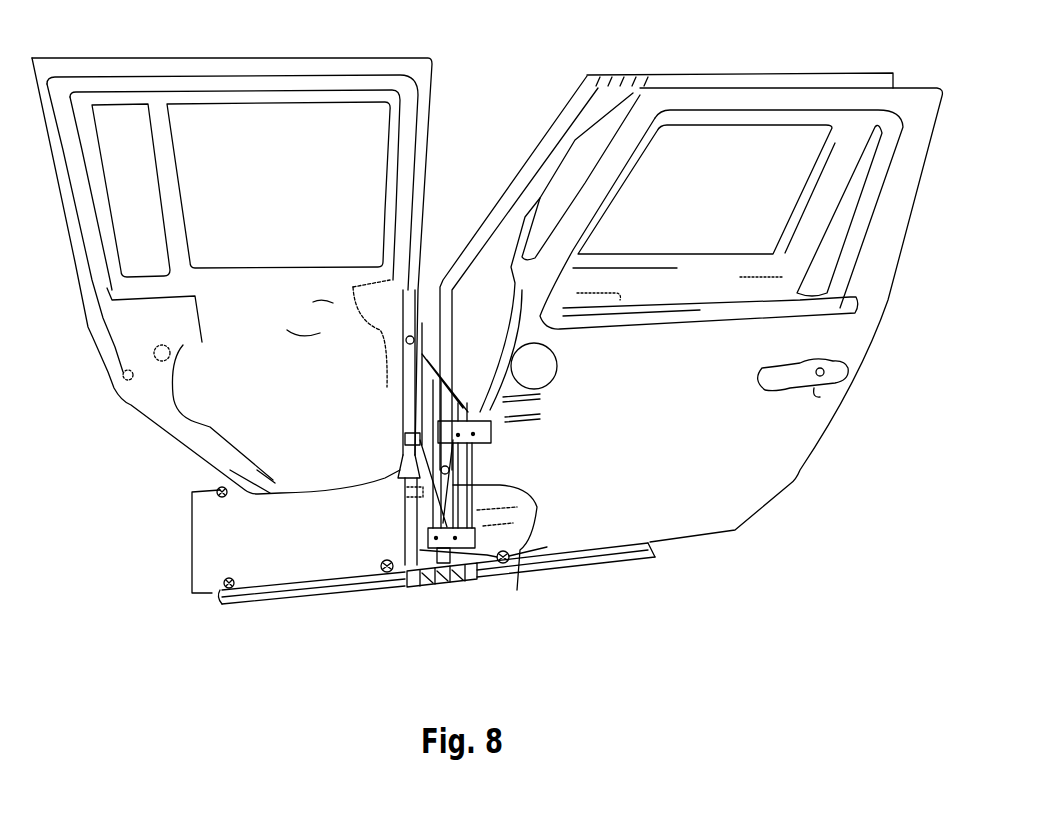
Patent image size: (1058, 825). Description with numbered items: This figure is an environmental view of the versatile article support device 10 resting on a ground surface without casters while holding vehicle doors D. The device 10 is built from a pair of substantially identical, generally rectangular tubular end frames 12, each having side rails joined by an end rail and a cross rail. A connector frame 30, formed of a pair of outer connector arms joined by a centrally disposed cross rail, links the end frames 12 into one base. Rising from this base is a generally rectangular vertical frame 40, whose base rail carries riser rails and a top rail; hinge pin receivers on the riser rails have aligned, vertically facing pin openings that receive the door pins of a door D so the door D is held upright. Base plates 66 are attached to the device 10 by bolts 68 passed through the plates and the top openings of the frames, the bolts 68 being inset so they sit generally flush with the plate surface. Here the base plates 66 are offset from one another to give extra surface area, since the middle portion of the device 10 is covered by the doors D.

The versatile article support device 10 is at (378, 527).
The end frame 12 is at (322, 592).
The connector frame 30 is at (447, 583).
The vertical frame 40 is at (509, 563).
The base plate 66 is at (222, 560).
The bolt 68 is at (218, 495).
The door D is at (394, 68).